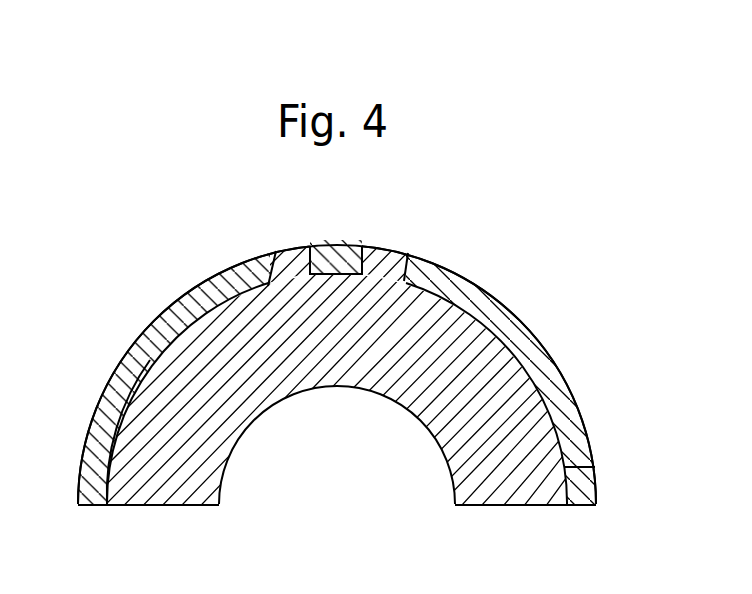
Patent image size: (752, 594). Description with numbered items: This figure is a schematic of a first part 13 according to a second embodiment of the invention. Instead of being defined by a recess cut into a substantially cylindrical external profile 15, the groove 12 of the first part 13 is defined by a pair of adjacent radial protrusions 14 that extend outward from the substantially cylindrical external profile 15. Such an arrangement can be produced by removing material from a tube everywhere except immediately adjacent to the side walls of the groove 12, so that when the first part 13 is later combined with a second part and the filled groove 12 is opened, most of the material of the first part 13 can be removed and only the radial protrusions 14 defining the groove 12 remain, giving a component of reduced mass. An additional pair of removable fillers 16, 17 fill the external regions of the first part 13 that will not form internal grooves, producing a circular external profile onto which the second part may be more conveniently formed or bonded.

The groove 12 is at (343, 238).
The first part 13 is at (508, 468).
The radial protrusions 14 is at (284, 262).
The substantially cylindrical external profile 15 is at (594, 468).
The removable filler 16 is at (530, 347).
The removable filler 17 is at (136, 364).